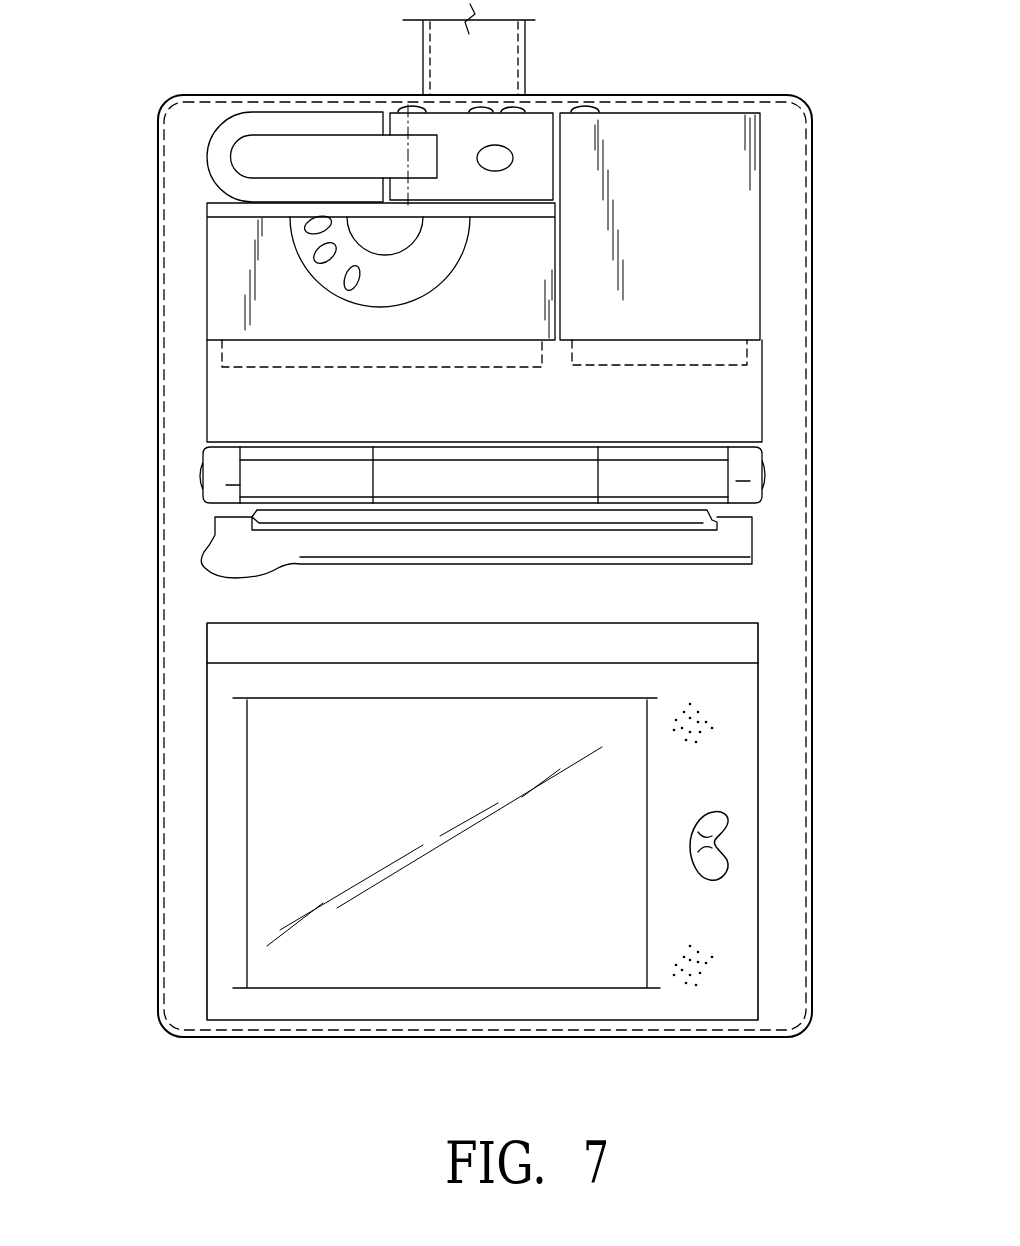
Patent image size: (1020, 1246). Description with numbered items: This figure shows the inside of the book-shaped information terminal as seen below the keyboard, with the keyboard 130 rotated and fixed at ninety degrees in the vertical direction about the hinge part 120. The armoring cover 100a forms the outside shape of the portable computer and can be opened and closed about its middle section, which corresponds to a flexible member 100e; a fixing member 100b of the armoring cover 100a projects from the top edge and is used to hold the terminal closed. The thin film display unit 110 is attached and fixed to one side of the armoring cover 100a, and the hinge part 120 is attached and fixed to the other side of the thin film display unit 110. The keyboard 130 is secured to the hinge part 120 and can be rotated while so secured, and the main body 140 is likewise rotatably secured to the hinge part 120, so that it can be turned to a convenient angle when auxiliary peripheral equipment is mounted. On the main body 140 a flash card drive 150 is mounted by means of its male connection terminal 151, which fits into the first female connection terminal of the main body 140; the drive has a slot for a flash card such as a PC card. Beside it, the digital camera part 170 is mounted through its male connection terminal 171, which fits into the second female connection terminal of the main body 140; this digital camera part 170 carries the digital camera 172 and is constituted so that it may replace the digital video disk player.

The armoring cover 100a is at (813, 173).
The fixing member 100b is at (527, 60).
The flexible member 100e is at (173, 585).
The thin film display unit 110 is at (763, 796).
The hinge part 120 is at (769, 473).
The keyboard 130 is at (756, 540).
The main body 140 is at (761, 409).
The flash card drive 150 is at (766, 283).
The male connection terminal 151 is at (748, 353).
The digital camera part 170 is at (197, 253).
The male connection terminal 171 is at (218, 358).
The digital camera 172 is at (157, 144).